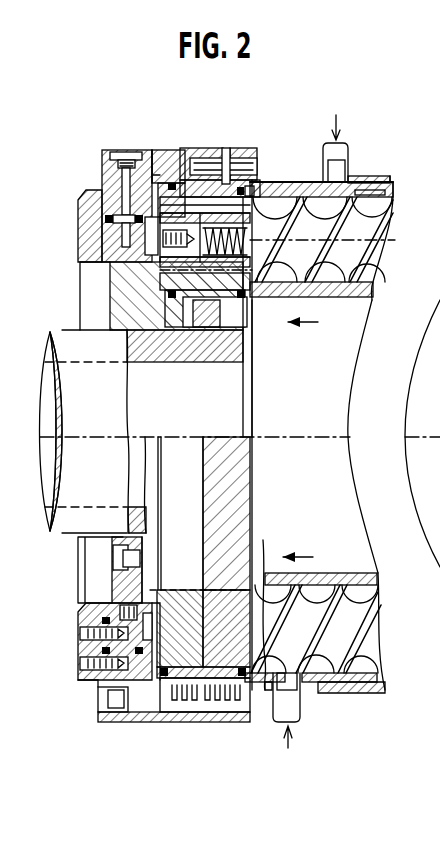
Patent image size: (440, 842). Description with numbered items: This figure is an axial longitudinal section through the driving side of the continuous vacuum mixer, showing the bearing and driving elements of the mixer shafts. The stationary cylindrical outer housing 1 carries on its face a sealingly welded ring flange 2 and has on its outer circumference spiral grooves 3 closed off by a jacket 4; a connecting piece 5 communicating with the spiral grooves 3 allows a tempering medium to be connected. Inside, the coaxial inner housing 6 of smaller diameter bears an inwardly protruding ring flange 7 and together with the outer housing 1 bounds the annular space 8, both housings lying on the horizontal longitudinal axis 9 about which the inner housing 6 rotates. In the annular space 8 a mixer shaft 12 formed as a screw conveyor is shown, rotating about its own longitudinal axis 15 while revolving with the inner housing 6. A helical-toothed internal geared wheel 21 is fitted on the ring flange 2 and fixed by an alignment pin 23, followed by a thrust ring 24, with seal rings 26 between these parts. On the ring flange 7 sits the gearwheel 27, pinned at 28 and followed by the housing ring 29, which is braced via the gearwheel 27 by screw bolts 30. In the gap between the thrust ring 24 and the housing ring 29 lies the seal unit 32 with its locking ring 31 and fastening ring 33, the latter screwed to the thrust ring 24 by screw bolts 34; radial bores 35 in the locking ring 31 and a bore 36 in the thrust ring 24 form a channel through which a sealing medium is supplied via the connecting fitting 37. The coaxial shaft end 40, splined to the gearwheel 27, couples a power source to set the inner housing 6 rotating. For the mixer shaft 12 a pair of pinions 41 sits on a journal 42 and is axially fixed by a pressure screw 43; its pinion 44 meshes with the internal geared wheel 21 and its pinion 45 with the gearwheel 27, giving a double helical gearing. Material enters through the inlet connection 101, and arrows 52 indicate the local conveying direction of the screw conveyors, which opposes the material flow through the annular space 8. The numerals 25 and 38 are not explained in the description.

The outer housing 1 is at (284, 186).
The ring flange 2 is at (247, 158).
The spiral grooves 3 is at (392, 182).
The jacket 4 is at (365, 178).
The connecting piece 5 is at (323, 158).
The inner housing 6 is at (334, 300).
The ring flange 7 is at (252, 320).
The annular space 8 is at (366, 290).
The longitudinal axis 9 is at (427, 434).
The mixer shaft 12 is at (367, 258).
The longitudinal axis 15 is at (393, 190).
The internal geared wheel 21 is at (195, 205).
The alignment pin 23 is at (250, 182).
The thrust ring 24 is at (135, 152).
The screw 25 is at (105, 702).
The seal rings 26 is at (118, 254).
The gearwheel 27 is at (205, 327).
The pinning location 28 is at (252, 300).
The housing ring 29 is at (135, 313).
The screw bolts 30 is at (118, 556).
The locking ring 31 is at (88, 616).
The seal unit 32 is at (100, 272).
The fastening ring 33 is at (86, 632).
The screw bolts 34 is at (80, 676).
The radial bores 35 is at (124, 228).
The bore 36 is at (112, 190).
The connecting fitting 37 is at (120, 162).
The screw 38 is at (86, 651).
The shaft end 40 is at (98, 483).
The pair of pinions 41 is at (195, 586).
The journal 42 is at (202, 164).
The pressure screw 43 is at (150, 180).
The pinion 44 is at (176, 182).
The pinion 45 is at (226, 160).
The arrows 52 is at (312, 322).
The inlet connection 101 is at (300, 702).